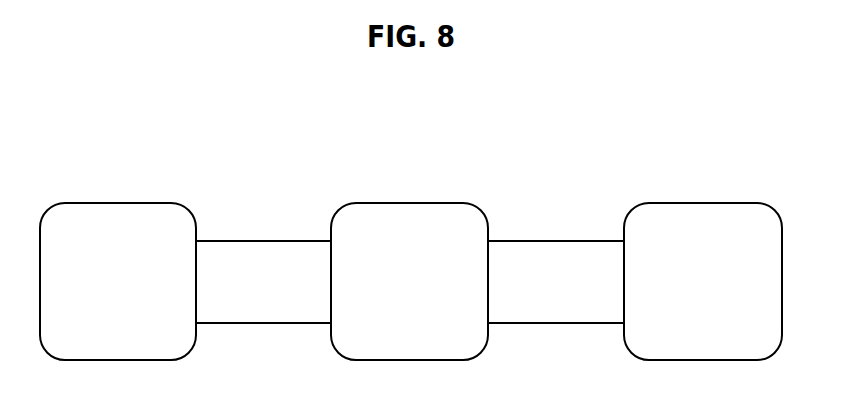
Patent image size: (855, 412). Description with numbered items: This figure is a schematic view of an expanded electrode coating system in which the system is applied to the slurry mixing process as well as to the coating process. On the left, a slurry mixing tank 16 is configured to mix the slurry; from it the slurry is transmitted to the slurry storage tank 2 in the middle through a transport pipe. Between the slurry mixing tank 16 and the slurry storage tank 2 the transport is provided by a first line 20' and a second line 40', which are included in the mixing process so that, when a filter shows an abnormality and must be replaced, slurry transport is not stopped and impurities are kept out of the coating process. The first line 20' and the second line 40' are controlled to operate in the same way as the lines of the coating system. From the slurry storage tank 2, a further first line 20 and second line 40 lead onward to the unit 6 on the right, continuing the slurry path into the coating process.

The slurry mixing tank 16 is at (98, 203).
The slurry storage tank 2 is at (410, 203).
The second unit 6 is at (707, 203).
The first line 20' is at (263, 206).
The second line 40' is at (263, 359).
The second upper connection line 20 is at (556, 206).
The second lower connection line 40 is at (556, 359).